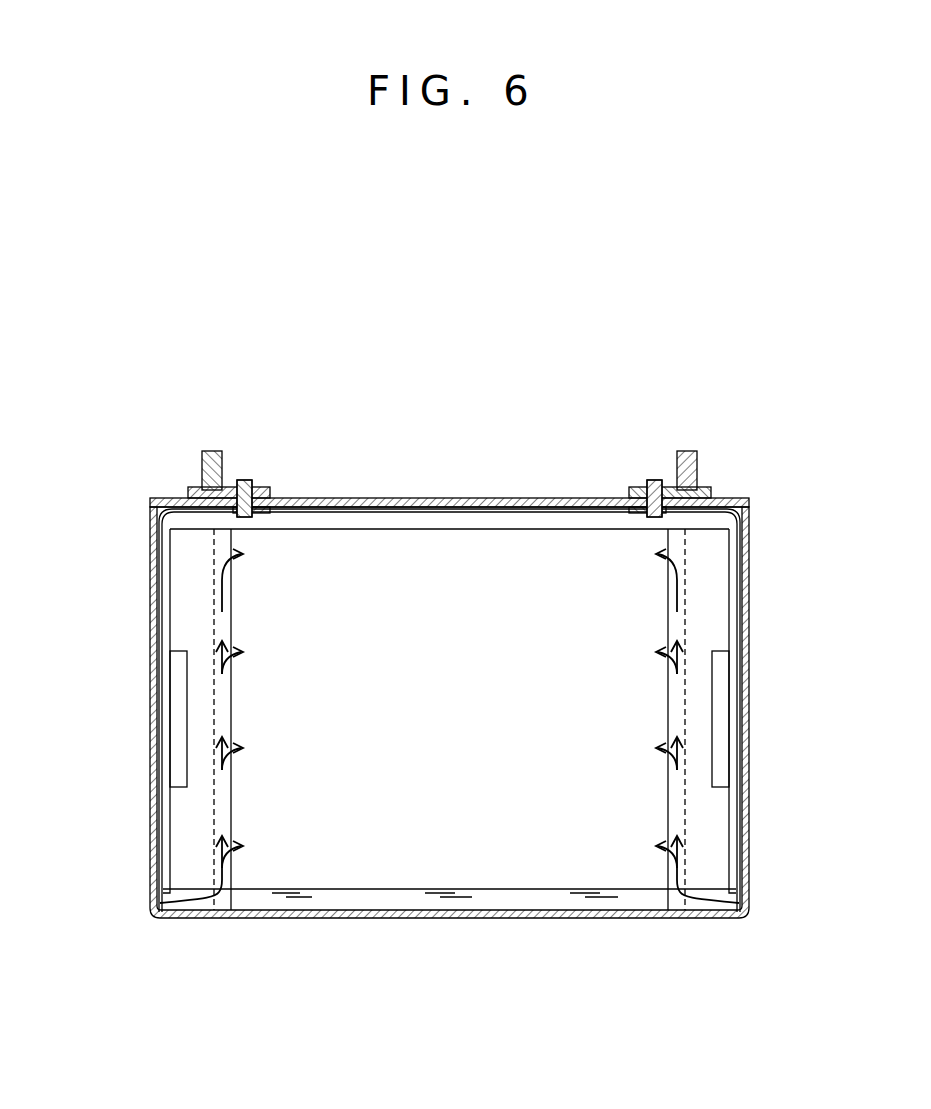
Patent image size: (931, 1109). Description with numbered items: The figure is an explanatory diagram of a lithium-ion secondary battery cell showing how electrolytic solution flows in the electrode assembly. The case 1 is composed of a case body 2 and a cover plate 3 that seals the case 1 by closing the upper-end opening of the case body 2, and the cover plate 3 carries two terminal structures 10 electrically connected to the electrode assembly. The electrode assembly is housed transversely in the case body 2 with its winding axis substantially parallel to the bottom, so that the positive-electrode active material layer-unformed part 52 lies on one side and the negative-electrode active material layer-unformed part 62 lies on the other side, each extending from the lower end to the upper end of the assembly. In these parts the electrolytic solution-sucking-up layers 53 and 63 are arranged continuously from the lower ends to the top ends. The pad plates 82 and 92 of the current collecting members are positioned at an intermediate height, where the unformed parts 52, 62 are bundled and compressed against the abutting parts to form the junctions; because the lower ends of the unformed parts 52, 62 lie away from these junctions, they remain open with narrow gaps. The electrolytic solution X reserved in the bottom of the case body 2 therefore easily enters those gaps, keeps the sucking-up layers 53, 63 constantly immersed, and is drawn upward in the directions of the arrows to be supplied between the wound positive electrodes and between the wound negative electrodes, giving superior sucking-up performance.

The case 1 is at (80, 453).
The case body 2 is at (150, 545).
The cover plate 3 is at (167, 497).
The terminal structure 10 is at (268, 430).
The positive-electrode active material layer-unformed part 52 is at (712, 581).
The electrolytic solution-sucking-up layer 53 is at (679, 626).
The negative-electrode active material layer-unformed part 62 is at (194, 593).
The electrolytic solution-sucking-up layer 63 is at (218, 626).
The pad plate 82 is at (722, 717).
The pad plate 92 is at (176, 720).
The electrolytic solution X is at (638, 889).